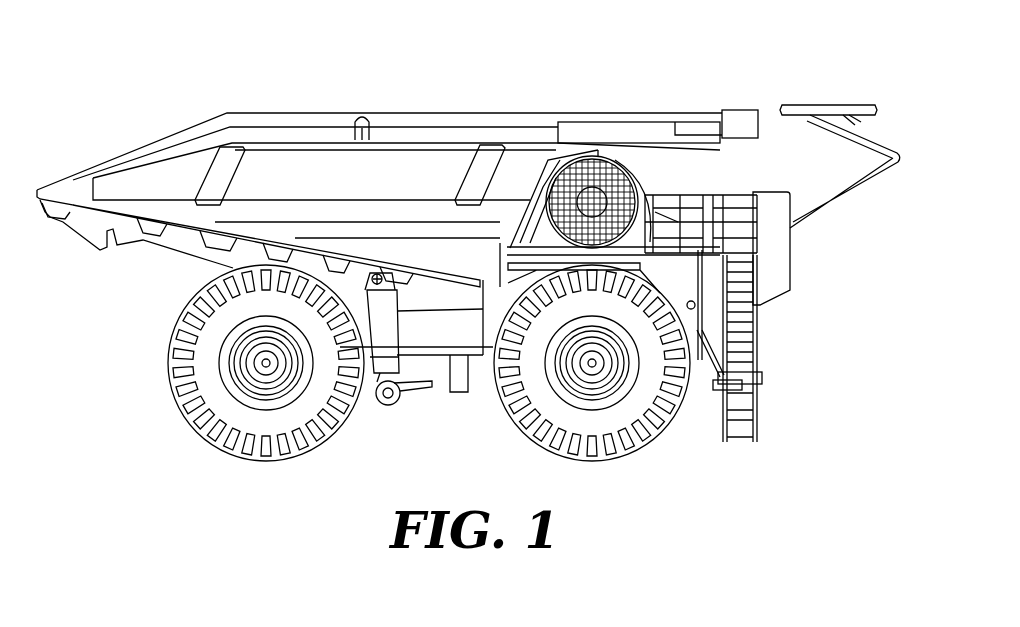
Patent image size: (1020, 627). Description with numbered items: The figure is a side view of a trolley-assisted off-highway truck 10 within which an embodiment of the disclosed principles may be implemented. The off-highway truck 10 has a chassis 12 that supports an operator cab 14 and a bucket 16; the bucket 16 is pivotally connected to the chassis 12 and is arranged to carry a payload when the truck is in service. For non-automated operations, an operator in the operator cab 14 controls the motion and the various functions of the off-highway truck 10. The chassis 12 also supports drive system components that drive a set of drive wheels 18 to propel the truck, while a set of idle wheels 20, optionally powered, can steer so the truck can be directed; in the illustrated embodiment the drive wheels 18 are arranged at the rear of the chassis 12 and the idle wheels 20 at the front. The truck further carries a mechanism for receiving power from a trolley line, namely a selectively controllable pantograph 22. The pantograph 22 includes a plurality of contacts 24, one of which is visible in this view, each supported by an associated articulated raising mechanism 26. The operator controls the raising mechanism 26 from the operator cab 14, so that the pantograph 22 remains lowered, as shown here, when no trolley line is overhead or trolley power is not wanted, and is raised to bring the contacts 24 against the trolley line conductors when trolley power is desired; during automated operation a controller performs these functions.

The trolley-assisted off-highway truck 10 is at (619, 48).
The chassis 12 is at (462, 338).
The operator cab 14 is at (657, 184).
The bucket 16 is at (288, 117).
The drive wheels 18 is at (182, 418).
The idle wheels 20 is at (662, 433).
The pantograph 22 is at (837, 298).
The contacts 24 is at (811, 106).
The articulated raising mechanism 26 is at (818, 205).